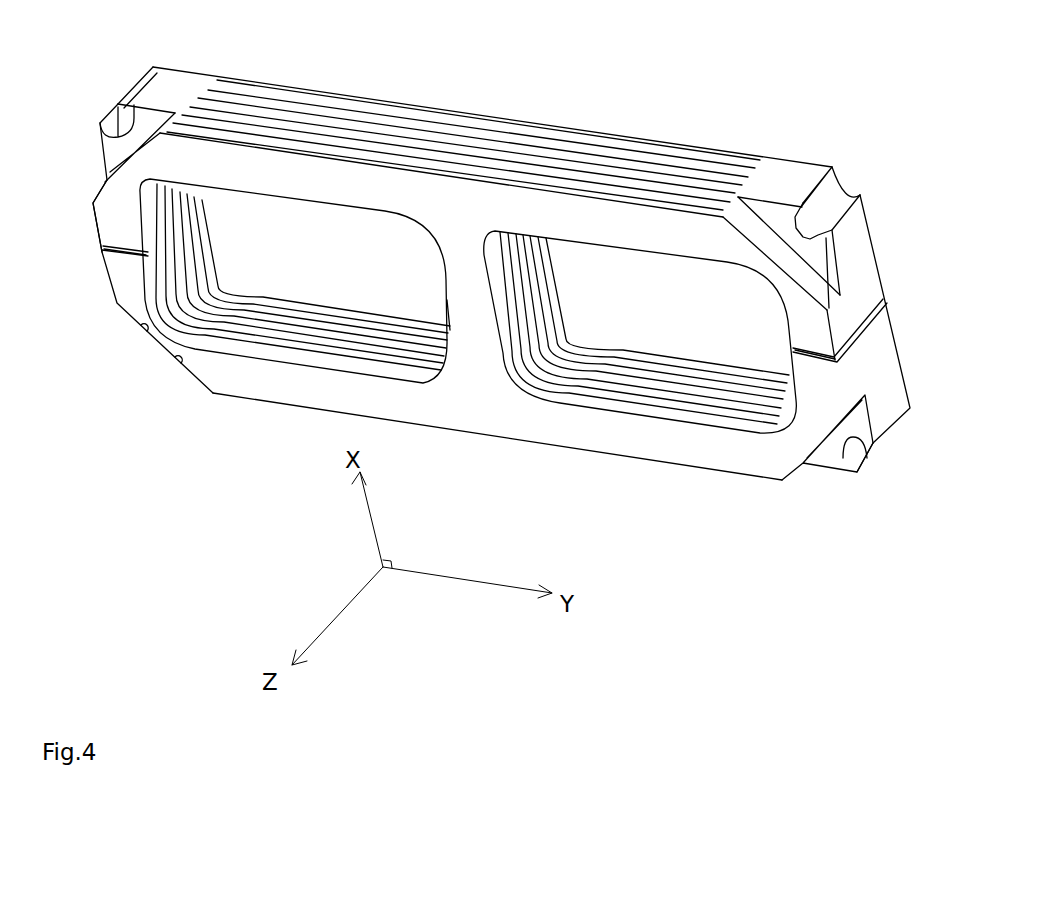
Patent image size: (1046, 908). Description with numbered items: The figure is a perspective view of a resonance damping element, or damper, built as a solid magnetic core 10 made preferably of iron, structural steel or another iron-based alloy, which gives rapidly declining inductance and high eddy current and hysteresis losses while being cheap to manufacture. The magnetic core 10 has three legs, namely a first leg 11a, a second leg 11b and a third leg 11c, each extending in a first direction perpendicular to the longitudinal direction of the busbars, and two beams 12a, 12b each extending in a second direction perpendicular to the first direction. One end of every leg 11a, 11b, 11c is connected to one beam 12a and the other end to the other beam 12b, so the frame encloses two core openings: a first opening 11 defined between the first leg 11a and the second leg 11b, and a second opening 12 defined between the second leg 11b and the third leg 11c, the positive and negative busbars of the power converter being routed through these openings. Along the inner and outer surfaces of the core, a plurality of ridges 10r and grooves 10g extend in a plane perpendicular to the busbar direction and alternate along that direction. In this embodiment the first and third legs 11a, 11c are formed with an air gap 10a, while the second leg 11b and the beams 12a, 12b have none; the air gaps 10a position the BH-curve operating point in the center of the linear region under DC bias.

The magnetic core 10 is at (200, 437).
The air gap 10a is at (117, 257).
The groove 10g is at (568, 137).
The ridge 10r is at (650, 153).
The first opening 11 is at (313, 270).
The first leg 11a is at (132, 280).
The second leg 11b is at (480, 320).
The third leg 11c is at (813, 373).
The second opening 12 is at (698, 318).
The beam 12a is at (318, 173).
The beam 12b is at (598, 438).